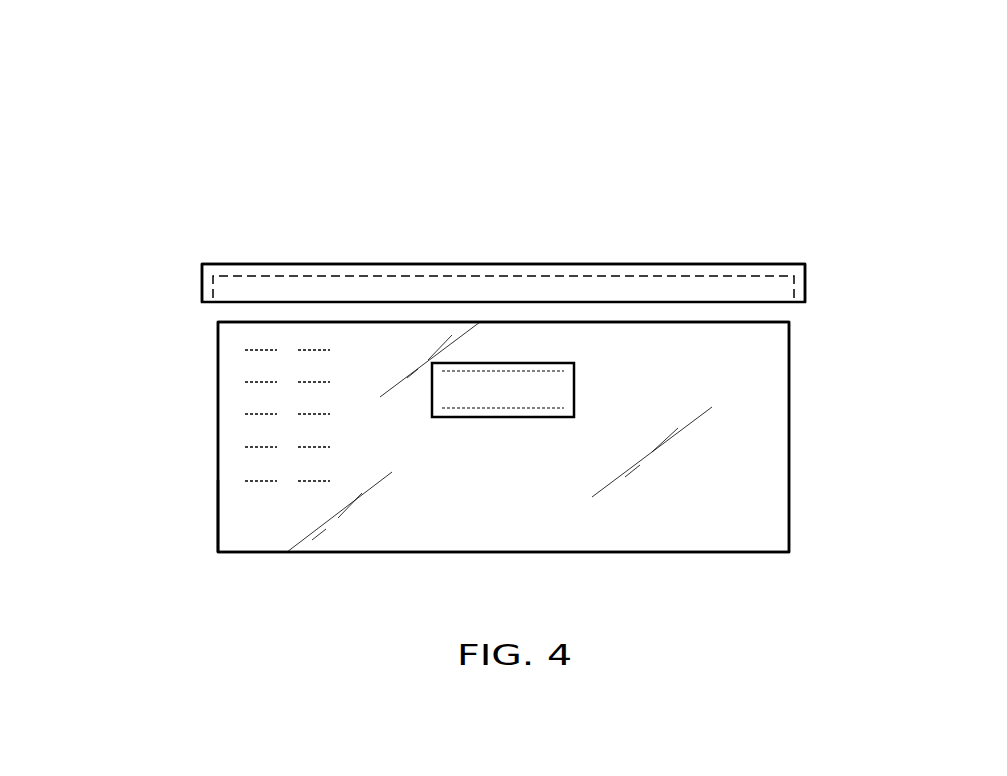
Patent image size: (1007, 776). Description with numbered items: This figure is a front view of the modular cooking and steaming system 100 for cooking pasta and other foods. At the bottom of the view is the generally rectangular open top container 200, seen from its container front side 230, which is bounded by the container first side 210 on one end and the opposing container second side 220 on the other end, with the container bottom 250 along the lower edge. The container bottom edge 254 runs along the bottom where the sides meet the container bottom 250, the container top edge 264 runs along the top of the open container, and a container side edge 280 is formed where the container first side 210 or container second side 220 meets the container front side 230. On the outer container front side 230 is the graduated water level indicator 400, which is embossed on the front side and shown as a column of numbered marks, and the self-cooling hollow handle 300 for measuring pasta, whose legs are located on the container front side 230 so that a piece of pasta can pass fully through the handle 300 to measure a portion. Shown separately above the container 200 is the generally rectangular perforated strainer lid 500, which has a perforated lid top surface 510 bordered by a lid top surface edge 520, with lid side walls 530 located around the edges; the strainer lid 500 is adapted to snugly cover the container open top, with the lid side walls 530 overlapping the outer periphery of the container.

The modular cooking and steaming system 100 is at (140, 155).
The strainer lid 500 is at (315, 263).
The lid top surface 510 is at (602, 264).
The lid top surface edge 520 is at (805, 266).
The lid side wall 530 is at (202, 290).
The container 200 is at (218, 347).
The container first side 210 is at (790, 440).
The container second side 220 is at (218, 398).
The container front side 230 is at (745, 503).
The container bottom 250 is at (725, 553).
The container bottom edge 254 is at (370, 553).
The container top edge 264 is at (748, 324).
The container side edge 280 is at (218, 512).
The handle 300 is at (542, 398).
The water level indicator 400 is at (253, 446).